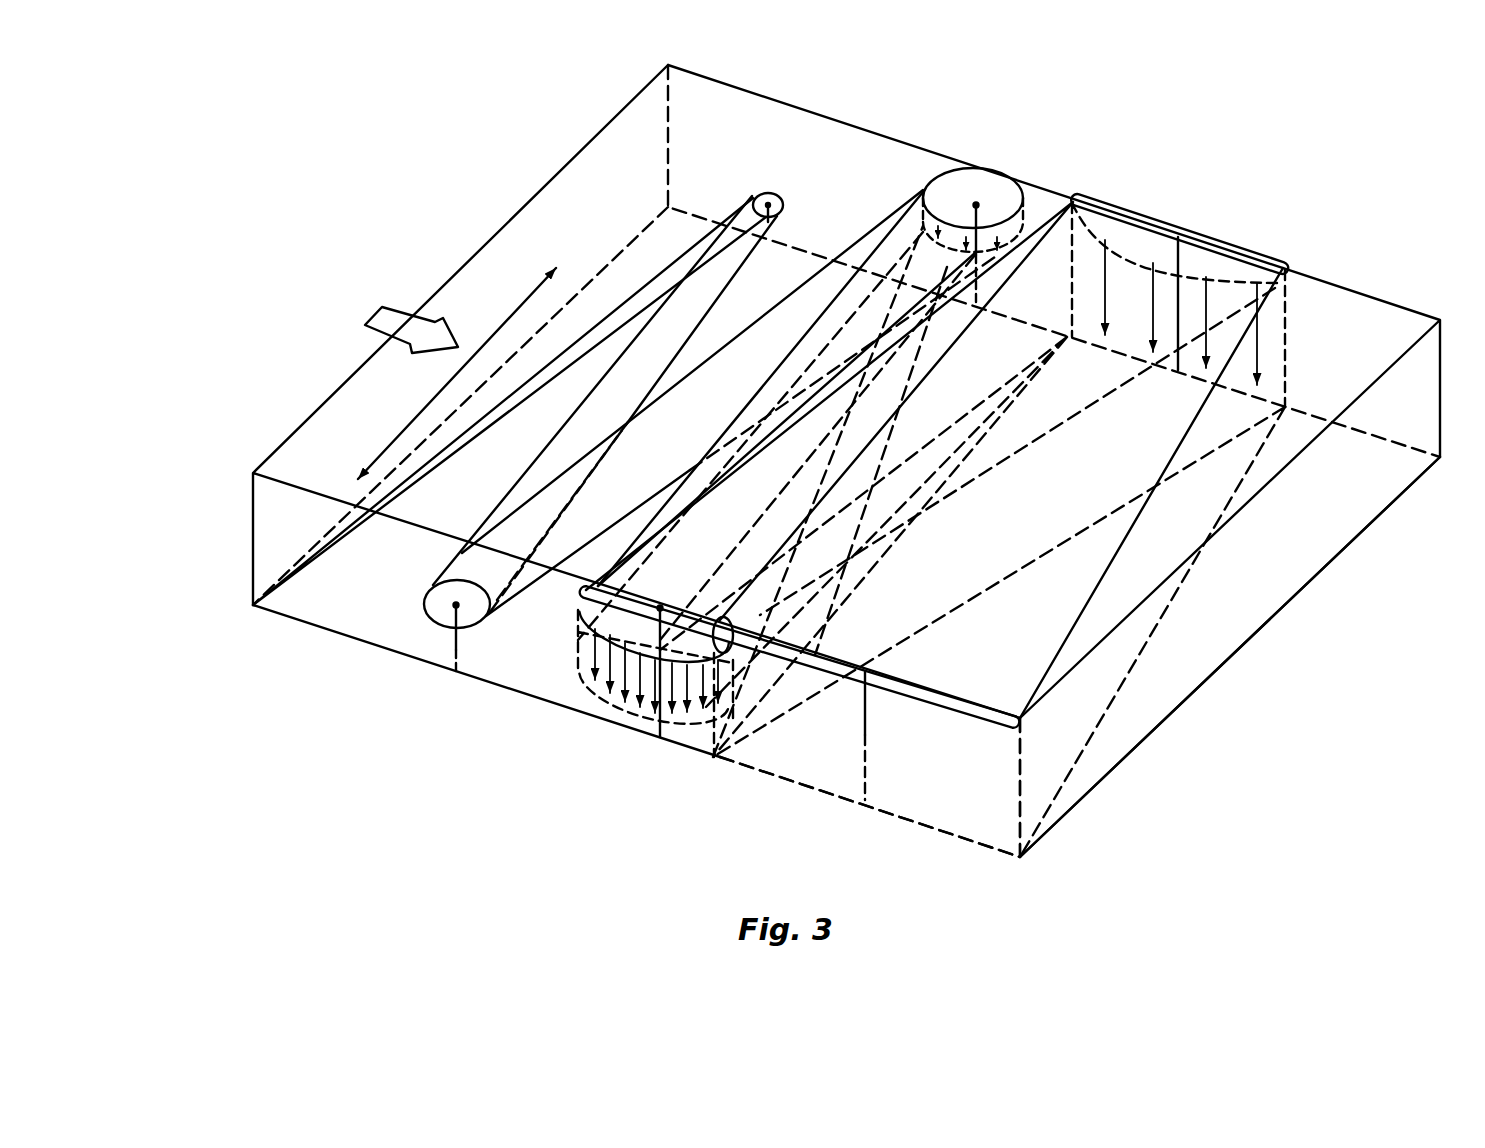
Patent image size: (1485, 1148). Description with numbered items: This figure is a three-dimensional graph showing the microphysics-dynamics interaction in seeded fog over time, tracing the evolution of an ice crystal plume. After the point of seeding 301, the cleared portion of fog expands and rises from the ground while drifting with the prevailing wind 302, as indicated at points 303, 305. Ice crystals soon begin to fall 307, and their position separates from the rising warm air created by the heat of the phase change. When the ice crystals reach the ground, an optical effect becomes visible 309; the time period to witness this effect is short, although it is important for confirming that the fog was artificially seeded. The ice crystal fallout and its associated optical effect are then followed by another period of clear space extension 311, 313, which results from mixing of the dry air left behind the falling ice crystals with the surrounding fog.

The point of seeding 301 is at (253, 605).
The prevailing wind 302 is at (380, 306).
The expansion point 303 is at (660, 285).
The expansion point 305 is at (988, 196).
The ice crystal fall 307 is at (927, 238).
The optical effect 309 is at (818, 688).
The clear space extension 311 is at (1118, 460).
The clear space extension 313 is at (985, 785).